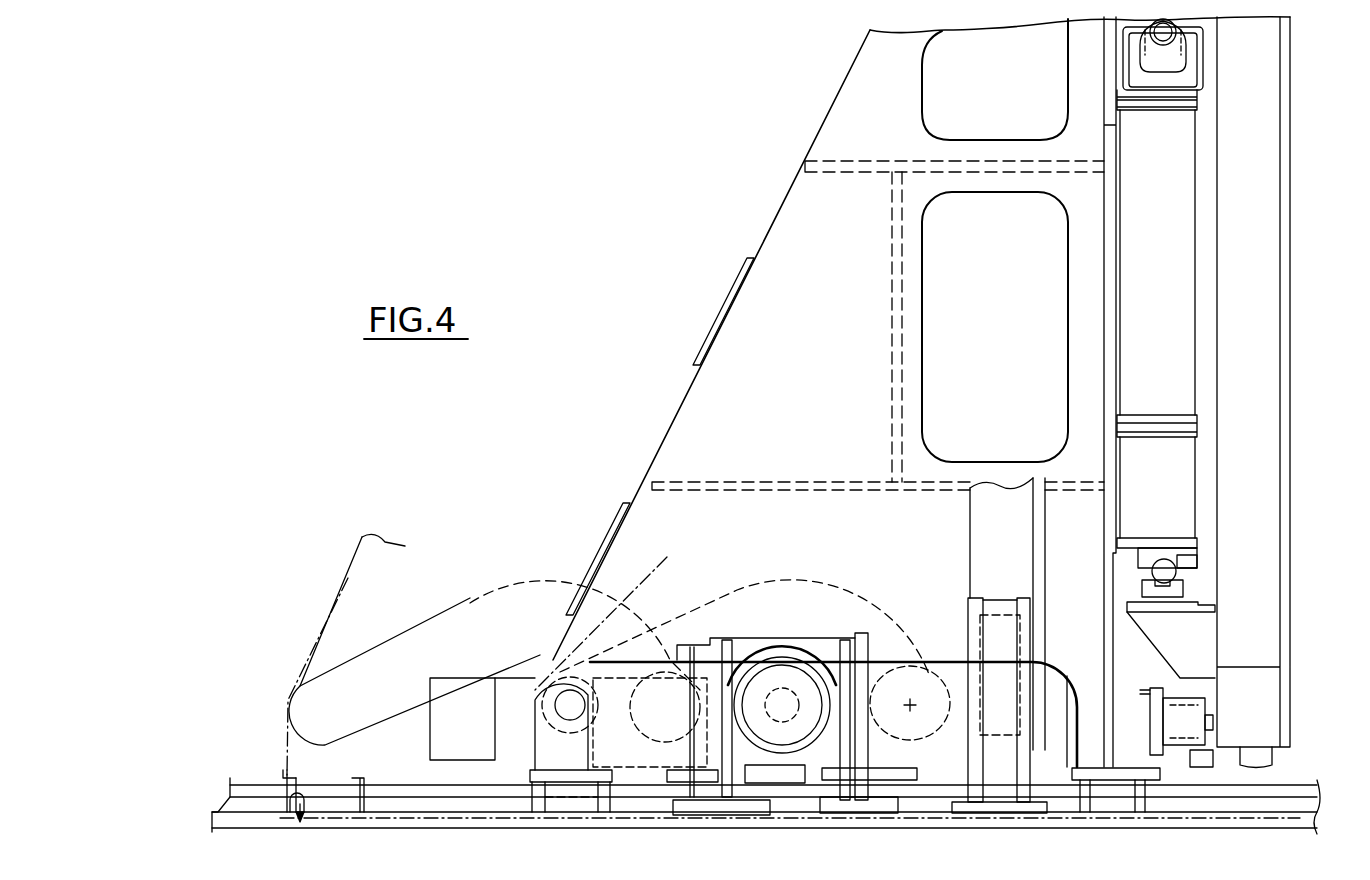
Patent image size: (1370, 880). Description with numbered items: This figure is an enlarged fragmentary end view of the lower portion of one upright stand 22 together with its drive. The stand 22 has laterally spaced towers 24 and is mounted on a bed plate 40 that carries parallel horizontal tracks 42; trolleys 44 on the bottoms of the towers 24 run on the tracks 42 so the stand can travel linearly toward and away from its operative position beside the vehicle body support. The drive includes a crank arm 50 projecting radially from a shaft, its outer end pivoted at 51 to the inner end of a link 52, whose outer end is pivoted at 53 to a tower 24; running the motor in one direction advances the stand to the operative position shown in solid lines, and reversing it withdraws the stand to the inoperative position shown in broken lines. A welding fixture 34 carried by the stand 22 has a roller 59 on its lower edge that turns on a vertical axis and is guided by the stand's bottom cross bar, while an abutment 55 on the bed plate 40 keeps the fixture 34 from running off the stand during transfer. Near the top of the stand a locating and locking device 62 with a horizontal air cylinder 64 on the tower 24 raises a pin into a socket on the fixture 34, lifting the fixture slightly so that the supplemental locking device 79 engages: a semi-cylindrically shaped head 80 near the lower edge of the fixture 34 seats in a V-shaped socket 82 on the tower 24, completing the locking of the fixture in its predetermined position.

The upright stand 22 is at (832, 70).
The tower 24 is at (826, 126).
The fixture 34 is at (1270, 297).
The bed plate 40 is at (290, 800).
The track 42 is at (247, 788).
The trolley 44 is at (573, 805).
The crank arm 50 is at (692, 745).
The pivot 51 is at (918, 690).
The link 52 is at (735, 588).
The pivot 53 is at (526, 656).
The abutment 55 is at (1013, 773).
The roller 59 is at (1265, 766).
The locating and locking device 62 is at (1210, 82).
The air cylinder 64 is at (1165, 38).
The supplemental locking device 79 is at (1198, 576).
The semi-cylindrically shaped head 80 is at (1152, 568).
The V-shaped socket 82 is at (1178, 558).